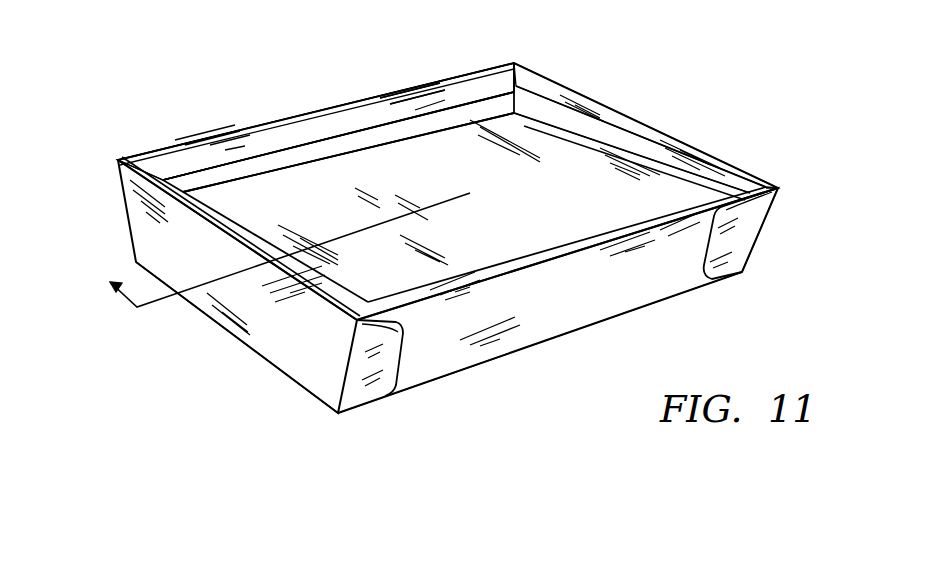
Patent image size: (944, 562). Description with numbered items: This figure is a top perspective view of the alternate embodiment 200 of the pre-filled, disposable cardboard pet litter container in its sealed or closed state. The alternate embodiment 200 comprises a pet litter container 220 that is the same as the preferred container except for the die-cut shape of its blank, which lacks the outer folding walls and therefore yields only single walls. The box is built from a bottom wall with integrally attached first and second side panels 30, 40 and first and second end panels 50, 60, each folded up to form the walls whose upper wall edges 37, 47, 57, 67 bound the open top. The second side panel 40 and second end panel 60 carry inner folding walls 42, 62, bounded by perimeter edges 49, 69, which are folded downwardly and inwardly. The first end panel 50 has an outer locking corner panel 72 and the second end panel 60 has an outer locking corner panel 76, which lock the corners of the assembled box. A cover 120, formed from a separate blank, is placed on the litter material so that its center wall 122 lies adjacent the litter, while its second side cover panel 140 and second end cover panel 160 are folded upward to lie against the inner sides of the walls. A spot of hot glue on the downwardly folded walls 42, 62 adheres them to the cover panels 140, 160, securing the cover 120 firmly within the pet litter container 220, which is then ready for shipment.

The alternate embodiment 200 is at (142, 131).
The pet litter container 220 is at (273, 340).
The first side panel 30 is at (565, 313).
The upper wall edge 37 is at (490, 270).
The second side panel 40 is at (436, 120).
The inner folding wall 42 is at (372, 118).
The upper wall edge 47 is at (183, 147).
The perimeter edge 49 is at (368, 120).
The first end panel 50 is at (212, 260).
The upper wall edge 57 is at (236, 234).
The second end panel 60 is at (532, 110).
The inner folding wall 62 is at (600, 128).
The upper wall edge 67 is at (764, 186).
The perimeter edge 69 is at (575, 134).
The outer locking corner panel 72 is at (366, 374).
The outer locking corner panel 76 is at (745, 215).
The cover 120 is at (607, 183).
The center wall 122 is at (476, 198).
The second side cover panel 140 is at (458, 128).
The second end cover panel 160 is at (652, 182).